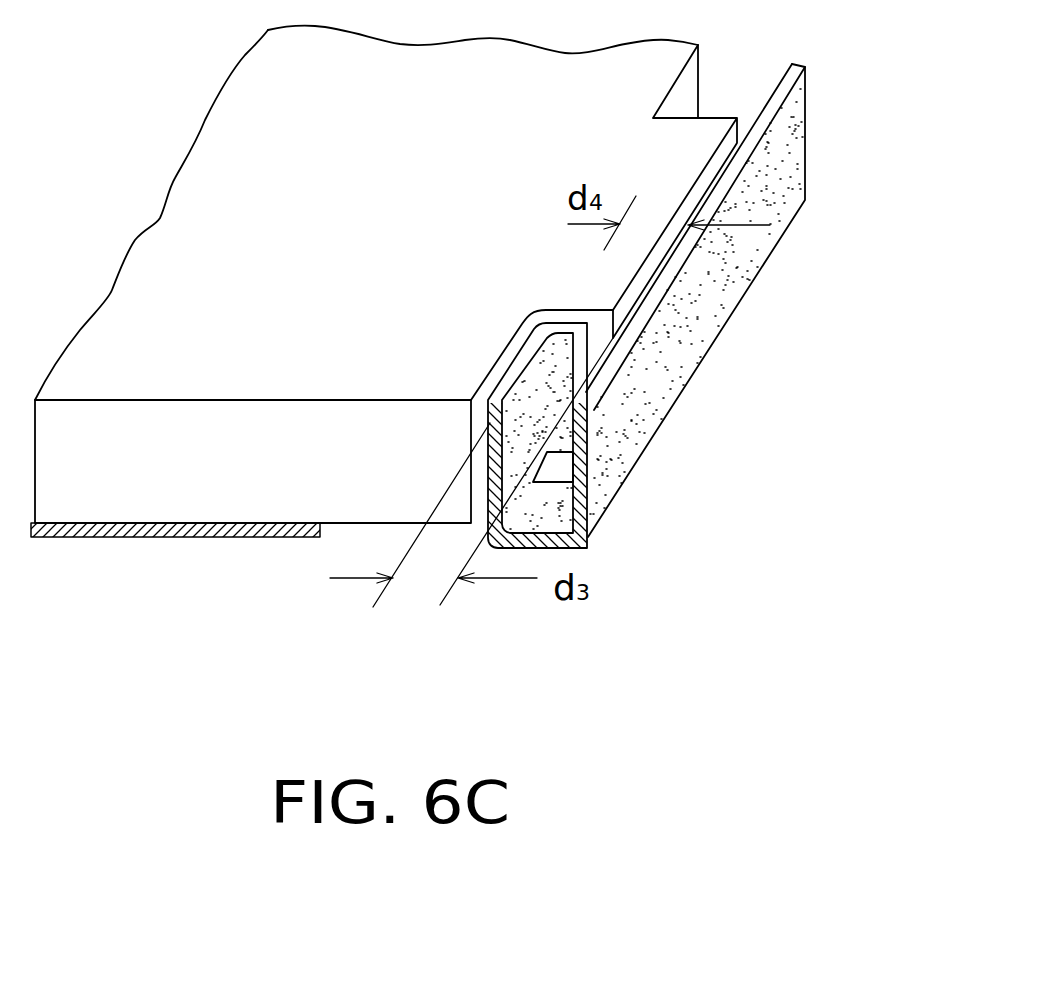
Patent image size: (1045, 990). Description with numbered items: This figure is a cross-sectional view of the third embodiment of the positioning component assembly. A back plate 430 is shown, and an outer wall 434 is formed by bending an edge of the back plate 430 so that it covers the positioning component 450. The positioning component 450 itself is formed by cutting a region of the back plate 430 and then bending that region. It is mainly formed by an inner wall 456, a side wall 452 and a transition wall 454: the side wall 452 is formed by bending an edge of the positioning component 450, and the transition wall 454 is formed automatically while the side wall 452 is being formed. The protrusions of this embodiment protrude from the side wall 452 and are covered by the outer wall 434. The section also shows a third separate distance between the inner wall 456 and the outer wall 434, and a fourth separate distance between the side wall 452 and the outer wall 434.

The back plate 430 is at (213, 540).
The outer wall 434 is at (787, 130).
The positioning component 450 is at (694, 435).
The side wall 452 is at (563, 370).
The transition wall 454 is at (566, 402).
The inner wall 456 is at (517, 452).